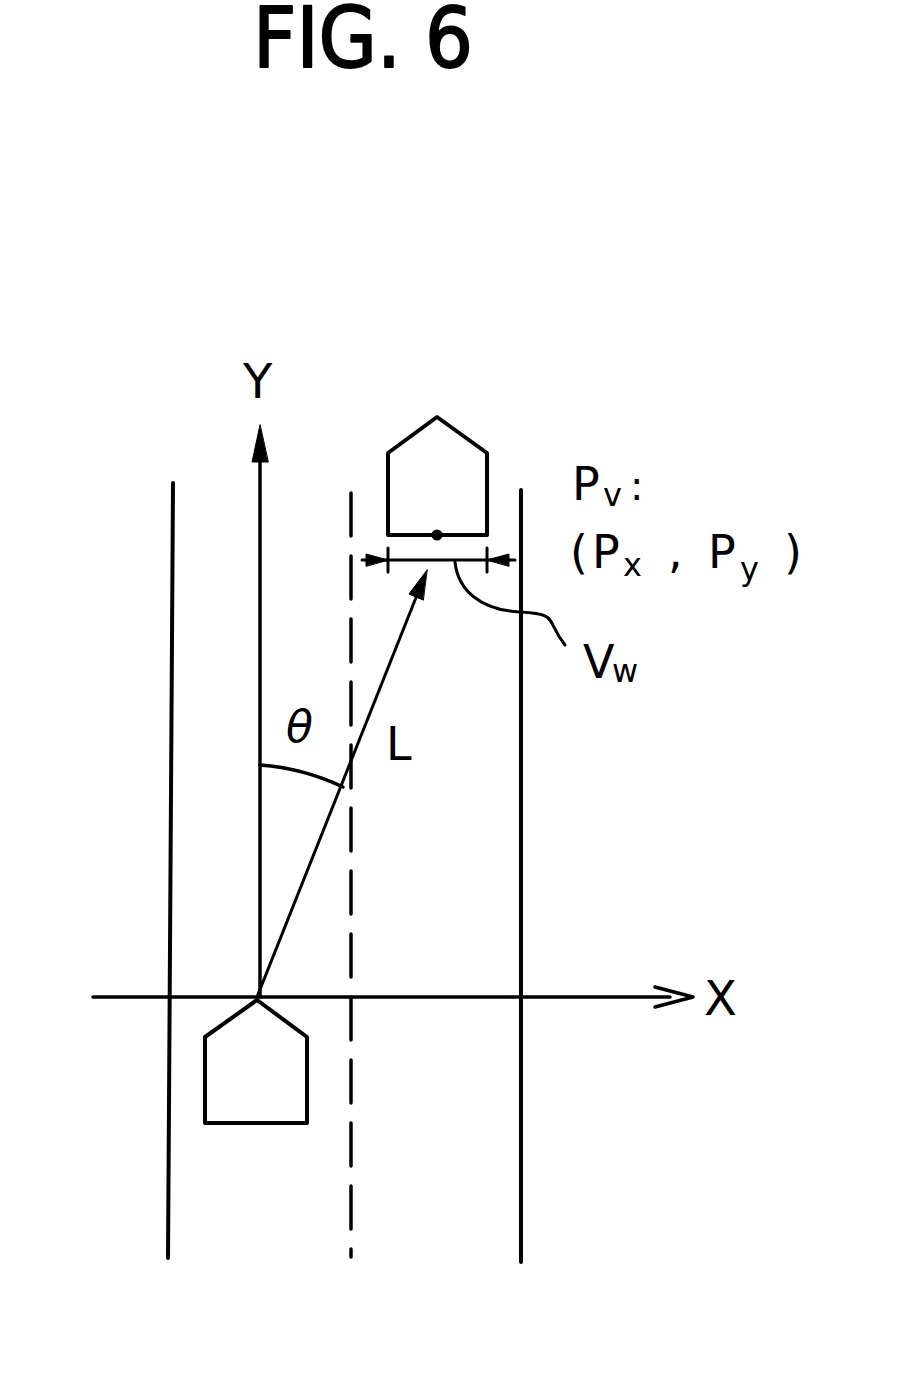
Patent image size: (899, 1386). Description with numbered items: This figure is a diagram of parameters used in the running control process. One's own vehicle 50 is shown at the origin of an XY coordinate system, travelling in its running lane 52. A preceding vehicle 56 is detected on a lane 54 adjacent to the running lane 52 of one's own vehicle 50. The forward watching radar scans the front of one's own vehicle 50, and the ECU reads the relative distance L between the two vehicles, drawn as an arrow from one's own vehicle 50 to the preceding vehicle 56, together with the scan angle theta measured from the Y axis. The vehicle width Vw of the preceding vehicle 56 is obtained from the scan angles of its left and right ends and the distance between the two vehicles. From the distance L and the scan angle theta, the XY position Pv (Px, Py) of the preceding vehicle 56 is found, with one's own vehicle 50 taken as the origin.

The own vehicle 50 is at (222, 1069).
The running lane 52 is at (192, 826).
The adjacent lane 54 is at (492, 843).
The preceding vehicle 56 is at (437, 417).